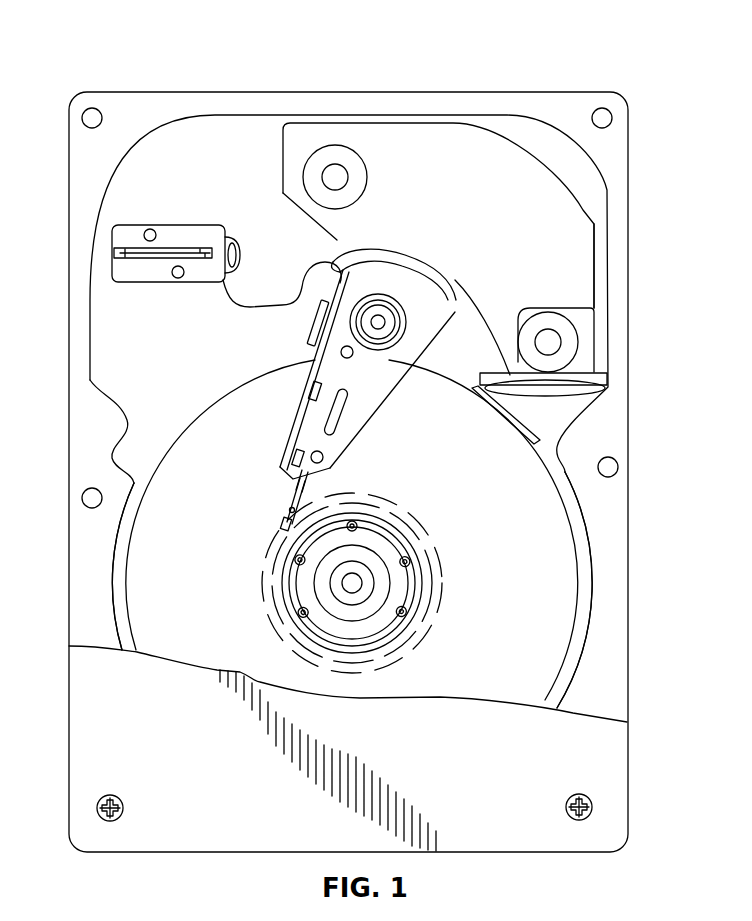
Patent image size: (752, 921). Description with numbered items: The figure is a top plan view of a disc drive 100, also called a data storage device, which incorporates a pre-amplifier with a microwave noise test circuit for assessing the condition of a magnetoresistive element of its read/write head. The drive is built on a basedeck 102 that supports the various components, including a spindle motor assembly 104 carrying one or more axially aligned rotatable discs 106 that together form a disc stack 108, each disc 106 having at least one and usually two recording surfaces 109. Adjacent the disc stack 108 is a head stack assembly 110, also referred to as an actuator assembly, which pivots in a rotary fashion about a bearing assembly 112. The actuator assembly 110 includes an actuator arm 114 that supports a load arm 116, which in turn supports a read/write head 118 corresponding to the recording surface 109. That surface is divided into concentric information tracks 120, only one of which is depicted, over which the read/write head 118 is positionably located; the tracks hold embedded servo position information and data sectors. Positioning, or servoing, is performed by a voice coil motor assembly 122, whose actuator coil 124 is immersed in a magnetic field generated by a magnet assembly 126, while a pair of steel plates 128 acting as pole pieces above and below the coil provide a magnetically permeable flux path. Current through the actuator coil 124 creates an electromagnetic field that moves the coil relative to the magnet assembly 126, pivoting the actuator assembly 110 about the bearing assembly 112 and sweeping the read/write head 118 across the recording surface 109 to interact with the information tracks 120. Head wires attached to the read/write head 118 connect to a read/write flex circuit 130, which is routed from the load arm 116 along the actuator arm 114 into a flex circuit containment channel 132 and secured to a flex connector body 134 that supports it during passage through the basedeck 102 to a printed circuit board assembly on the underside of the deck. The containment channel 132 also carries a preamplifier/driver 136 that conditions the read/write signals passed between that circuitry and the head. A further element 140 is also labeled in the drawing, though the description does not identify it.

The disc drive 100 is at (275, 68).
The basedeck 102 is at (221, 152).
The spindle motor assembly 104 is at (393, 535).
The rotatable disc 106 is at (575, 563).
The disc stack 108 is at (590, 610).
The recording surface 109 is at (500, 492).
The head stack assembly 110 is at (336, 419).
The bearing assembly 112 is at (418, 310).
The actuator arm 114 is at (327, 450).
The load arm 116 is at (292, 503).
The read/write head 118 is at (283, 530).
The information track 120 is at (423, 633).
The voice coil motor assembly 122 is at (590, 205).
The actuator coil 124 is at (380, 256).
The magnet assembly 126 is at (393, 140).
The steel plates 128 is at (573, 280).
The read/write flex circuit 130 is at (227, 300).
The flex circuit containment channel 132 is at (300, 458).
The flex connector body 134 is at (123, 276).
The preamplifier/driver 136 is at (317, 318).
The printed circuit board 140 is at (511, 914).